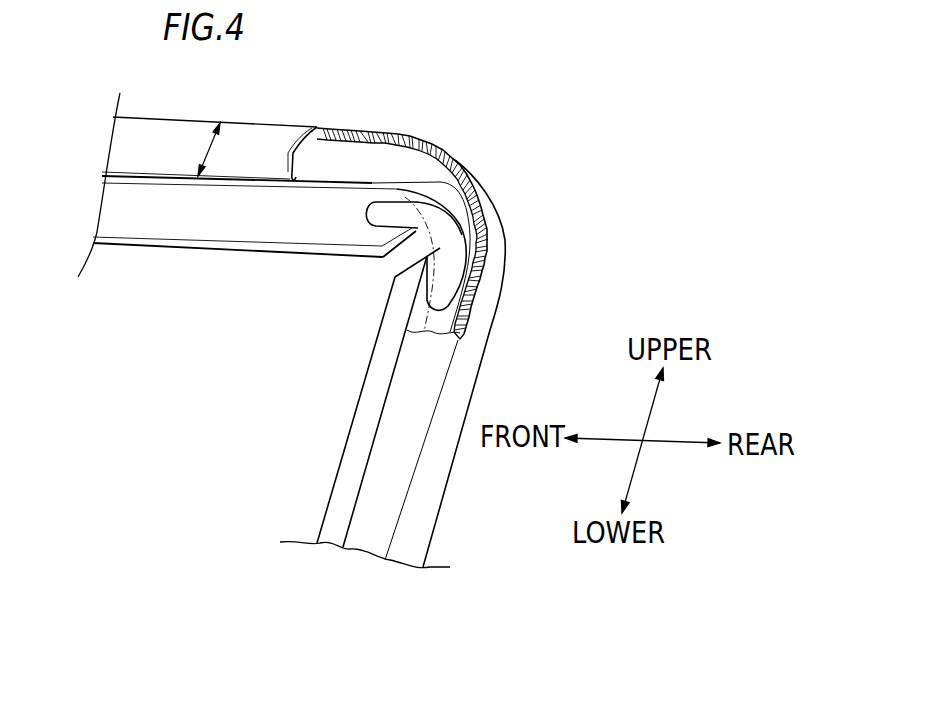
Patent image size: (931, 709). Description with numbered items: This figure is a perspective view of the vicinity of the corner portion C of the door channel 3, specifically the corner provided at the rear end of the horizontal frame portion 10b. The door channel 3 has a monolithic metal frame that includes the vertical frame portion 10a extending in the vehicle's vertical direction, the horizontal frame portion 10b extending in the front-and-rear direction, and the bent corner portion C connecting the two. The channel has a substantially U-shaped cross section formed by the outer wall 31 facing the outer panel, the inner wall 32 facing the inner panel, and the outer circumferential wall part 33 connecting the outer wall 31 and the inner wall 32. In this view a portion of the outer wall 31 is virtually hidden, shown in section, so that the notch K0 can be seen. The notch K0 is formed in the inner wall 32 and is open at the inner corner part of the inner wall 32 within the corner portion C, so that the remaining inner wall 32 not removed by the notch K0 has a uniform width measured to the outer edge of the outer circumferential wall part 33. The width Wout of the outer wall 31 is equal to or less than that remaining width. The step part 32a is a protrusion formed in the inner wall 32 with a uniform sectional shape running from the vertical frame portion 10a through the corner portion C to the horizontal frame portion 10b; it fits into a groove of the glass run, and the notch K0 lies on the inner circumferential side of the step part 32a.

The door channel 3 is at (513, 108).
The vertical frame portion 10a is at (365, 547).
The horizontal frame portion 10b is at (125, 147).
The outer wall 31 is at (255, 128).
The inner wall 32 is at (268, 237).
The step part 32a is at (370, 183).
The outer circumferential wall part 33 is at (503, 230).
The corner portion C is at (503, 167).
The notch K0 is at (443, 237).
The width of the outer wall Wout is at (205, 147).